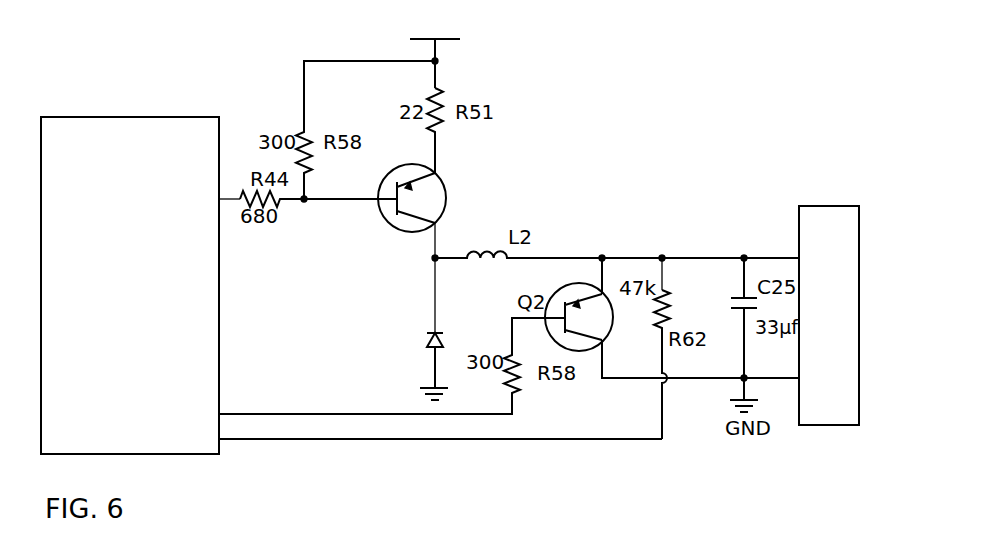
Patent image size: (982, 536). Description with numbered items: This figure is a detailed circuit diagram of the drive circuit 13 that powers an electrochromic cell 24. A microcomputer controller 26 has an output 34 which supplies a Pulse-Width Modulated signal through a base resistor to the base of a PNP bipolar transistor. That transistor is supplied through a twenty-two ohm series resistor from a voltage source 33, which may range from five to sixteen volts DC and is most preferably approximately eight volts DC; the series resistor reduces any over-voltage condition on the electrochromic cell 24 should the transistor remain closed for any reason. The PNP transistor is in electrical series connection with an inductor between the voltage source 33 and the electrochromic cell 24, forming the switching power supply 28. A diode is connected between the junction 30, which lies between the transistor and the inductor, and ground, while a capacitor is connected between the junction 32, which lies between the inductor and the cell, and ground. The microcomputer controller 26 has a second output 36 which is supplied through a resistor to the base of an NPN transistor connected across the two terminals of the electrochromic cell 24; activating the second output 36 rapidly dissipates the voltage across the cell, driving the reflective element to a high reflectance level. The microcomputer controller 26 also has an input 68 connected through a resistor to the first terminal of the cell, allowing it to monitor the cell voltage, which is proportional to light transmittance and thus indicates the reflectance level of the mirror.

The microcomputer controller 26 is at (107, 113).
The output 34 is at (228, 193).
The voltage source 33 is at (455, 33).
The drive circuit 13 is at (586, 190).
The junction 30 is at (428, 259).
The switching power supply 28 is at (483, 306).
The junction 32 is at (628, 255).
The electrochromic cell 24 is at (827, 202).
The second output 36 is at (236, 412).
The input 68 is at (237, 440).